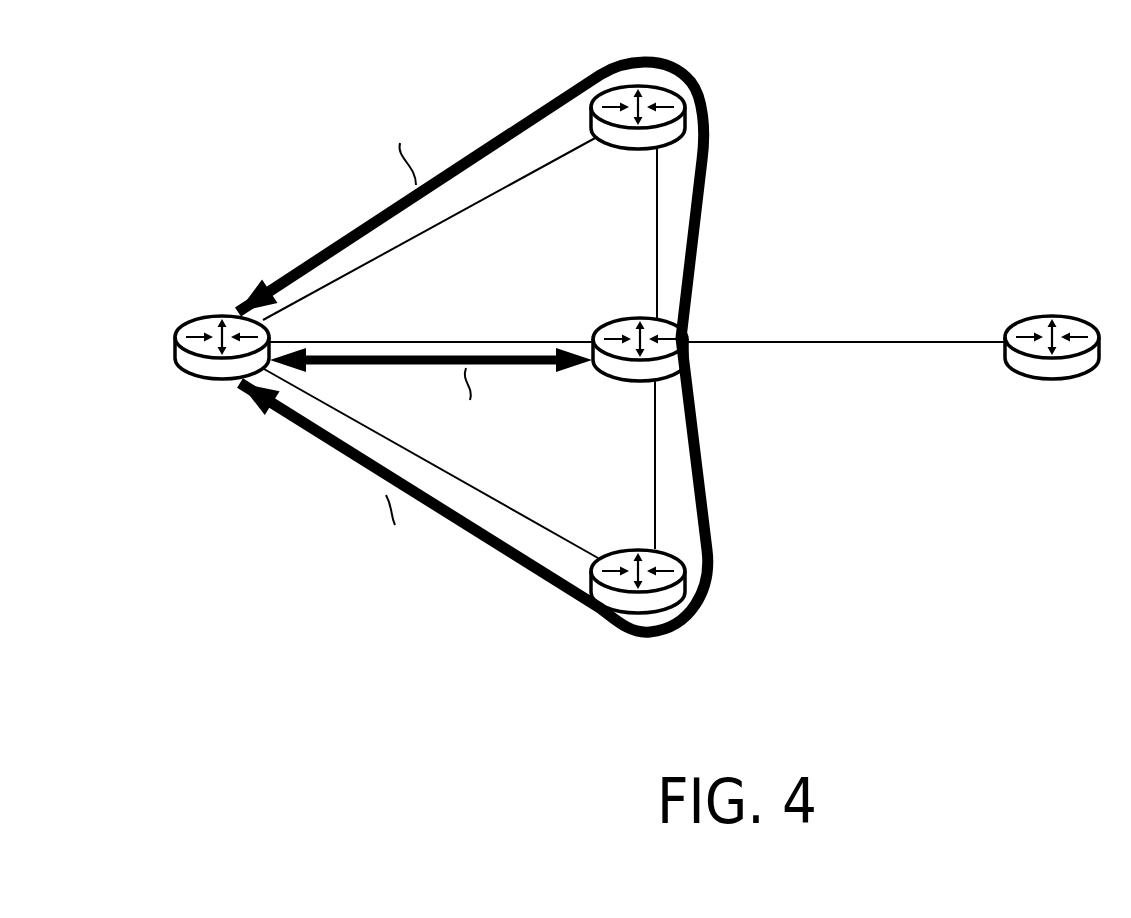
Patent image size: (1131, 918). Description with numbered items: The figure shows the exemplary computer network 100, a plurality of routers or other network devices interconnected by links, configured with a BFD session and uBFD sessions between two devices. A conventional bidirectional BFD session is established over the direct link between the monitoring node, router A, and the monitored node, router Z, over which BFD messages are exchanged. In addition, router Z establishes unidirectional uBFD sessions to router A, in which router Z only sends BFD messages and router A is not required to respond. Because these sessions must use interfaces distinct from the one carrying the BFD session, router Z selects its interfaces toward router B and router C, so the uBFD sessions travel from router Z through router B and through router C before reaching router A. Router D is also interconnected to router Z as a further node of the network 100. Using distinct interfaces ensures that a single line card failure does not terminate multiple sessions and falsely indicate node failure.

The computer network 100 is at (989, 77).
The router A is at (210, 316).
The router B is at (627, 152).
The router C is at (620, 550).
The router Z is at (688, 335).
The router D is at (1037, 315).